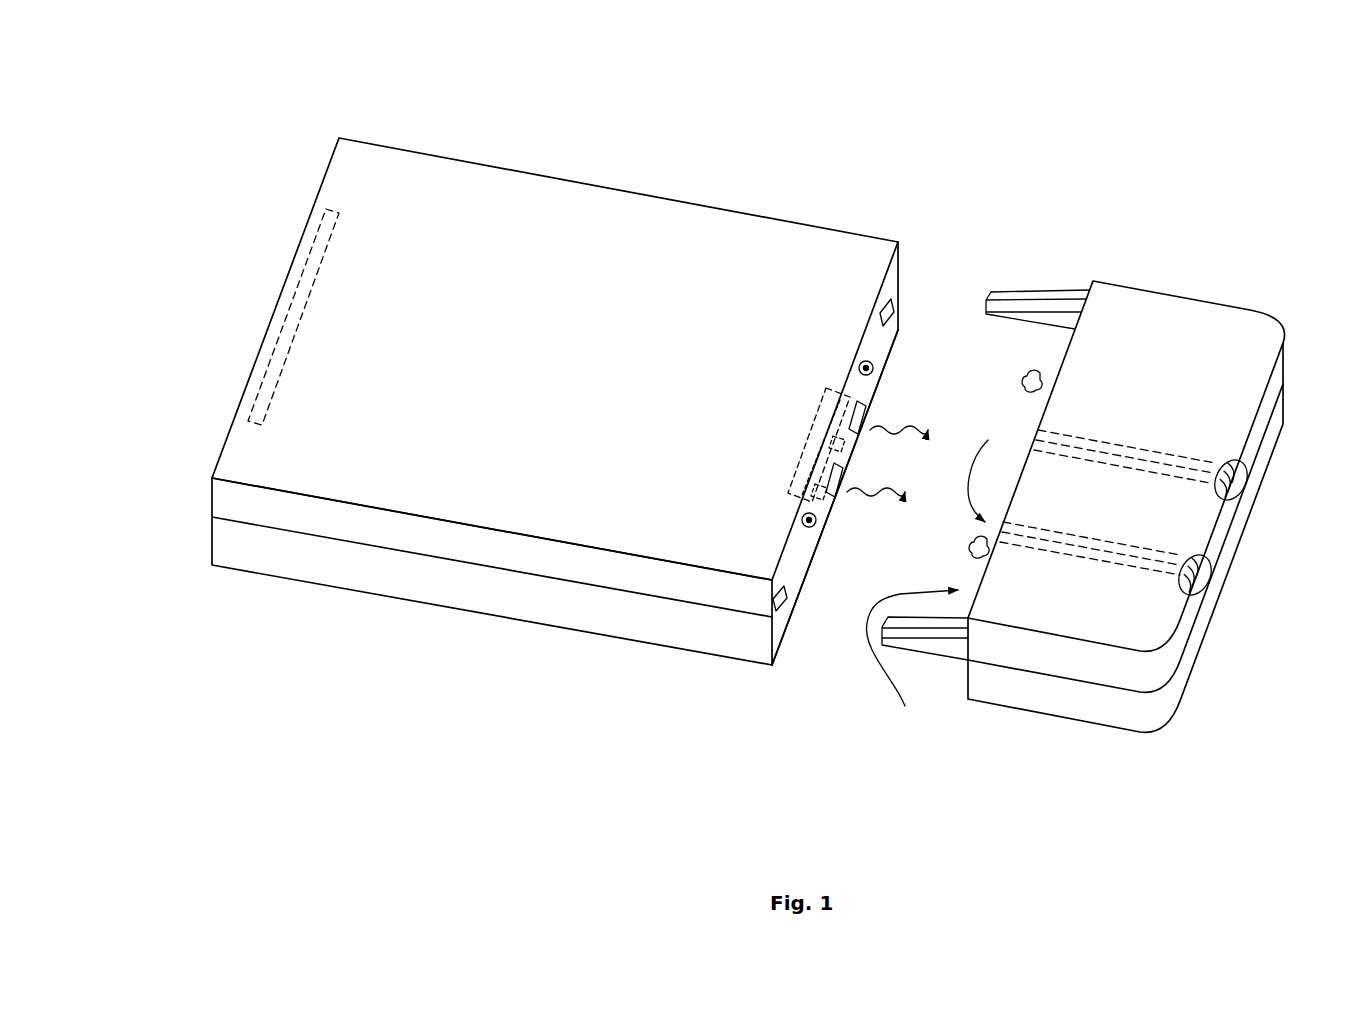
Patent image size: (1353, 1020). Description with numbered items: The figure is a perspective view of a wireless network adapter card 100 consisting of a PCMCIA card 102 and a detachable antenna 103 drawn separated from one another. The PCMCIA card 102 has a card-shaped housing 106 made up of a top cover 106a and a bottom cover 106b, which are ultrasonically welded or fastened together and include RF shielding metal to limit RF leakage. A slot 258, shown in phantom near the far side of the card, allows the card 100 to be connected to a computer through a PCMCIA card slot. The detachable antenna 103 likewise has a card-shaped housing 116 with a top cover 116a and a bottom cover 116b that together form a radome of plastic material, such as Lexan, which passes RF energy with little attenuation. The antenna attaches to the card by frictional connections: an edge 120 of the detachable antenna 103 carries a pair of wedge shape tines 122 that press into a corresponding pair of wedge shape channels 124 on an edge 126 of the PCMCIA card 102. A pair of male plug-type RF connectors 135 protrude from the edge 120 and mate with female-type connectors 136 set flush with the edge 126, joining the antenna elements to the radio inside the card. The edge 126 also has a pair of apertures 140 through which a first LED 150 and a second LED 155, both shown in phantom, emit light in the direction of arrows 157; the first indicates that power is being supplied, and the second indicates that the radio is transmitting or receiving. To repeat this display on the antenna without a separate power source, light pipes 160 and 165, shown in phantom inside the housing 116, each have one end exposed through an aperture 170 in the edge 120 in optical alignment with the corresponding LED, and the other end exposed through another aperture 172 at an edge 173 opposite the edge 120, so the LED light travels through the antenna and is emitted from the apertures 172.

The wireless network adapter card 100 is at (190, 112).
The PCMCIA card 102 is at (677, 193).
The detachable antenna 103 is at (1207, 274).
The card-shaped housing 106 is at (198, 455).
The top cover 106a is at (240, 456).
The bottom cover 106b is at (275, 566).
The card-shaped housing 116 is at (1288, 330).
The top cover 116a is at (1240, 322).
The bottom cover 116b is at (1268, 455).
The edge 120 is at (912, 662).
The wedge shape tines 122 is at (1018, 291).
The wedge shape channels 124 is at (889, 306).
The edge 126 is at (817, 600).
The male plug-type RF connectors 135 is at (1034, 394).
The female-type connectors 136 is at (864, 360).
The apertures 140 is at (872, 418).
The first LED 150 is at (789, 497).
The second LED 155 is at (833, 388).
The arrows 157 is at (905, 443).
The light pipe 160 is at (1098, 558).
The light pipe 165 is at (1110, 457).
The aperture 170 is at (1018, 443).
The aperture 172 is at (1262, 455).
The edge 173 is at (1253, 585).
The slot 258 is at (307, 251).